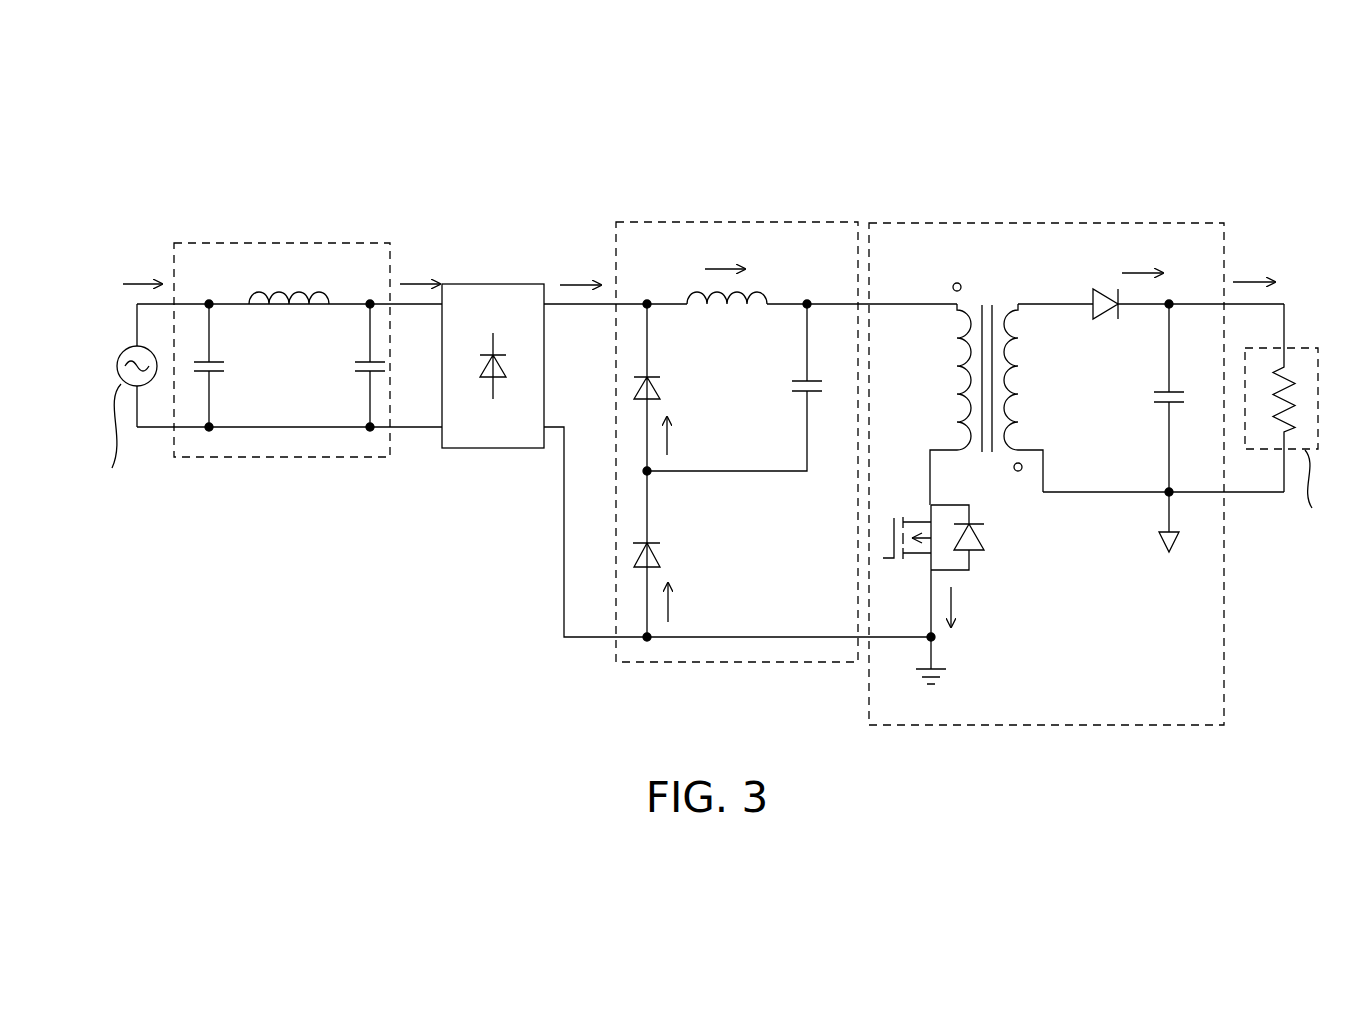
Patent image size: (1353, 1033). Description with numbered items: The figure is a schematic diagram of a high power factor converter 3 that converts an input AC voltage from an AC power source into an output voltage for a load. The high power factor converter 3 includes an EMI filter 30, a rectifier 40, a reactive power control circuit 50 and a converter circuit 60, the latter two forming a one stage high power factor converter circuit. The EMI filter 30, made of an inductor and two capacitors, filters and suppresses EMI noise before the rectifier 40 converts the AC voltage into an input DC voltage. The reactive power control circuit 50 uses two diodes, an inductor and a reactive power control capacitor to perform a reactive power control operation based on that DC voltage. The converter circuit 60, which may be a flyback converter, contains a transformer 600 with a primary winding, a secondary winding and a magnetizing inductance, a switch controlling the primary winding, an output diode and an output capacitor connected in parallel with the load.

The high power factor converter 3 is at (1181, 141).
The electromagnetic interference (EMI) filter 30 is at (206, 242).
The rectifier 40 is at (493, 284).
The reactive power control circuit 50 is at (670, 222).
The converter circuit 60 is at (917, 223).
The transformer 600 is at (993, 466).